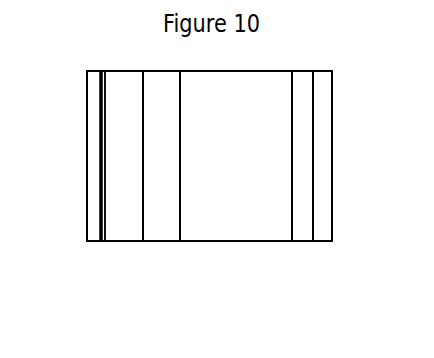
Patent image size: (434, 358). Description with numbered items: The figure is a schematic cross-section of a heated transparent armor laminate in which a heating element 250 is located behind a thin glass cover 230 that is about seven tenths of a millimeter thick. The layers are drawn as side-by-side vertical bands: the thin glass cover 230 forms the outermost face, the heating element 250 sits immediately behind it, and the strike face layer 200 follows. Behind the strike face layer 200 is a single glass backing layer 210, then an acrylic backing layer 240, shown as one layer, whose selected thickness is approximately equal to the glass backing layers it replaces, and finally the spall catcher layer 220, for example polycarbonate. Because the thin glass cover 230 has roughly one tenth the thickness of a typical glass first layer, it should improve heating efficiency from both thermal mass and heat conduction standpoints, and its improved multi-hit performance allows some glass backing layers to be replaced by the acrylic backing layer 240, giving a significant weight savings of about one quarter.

The strike face layer 200 is at (125, 202).
The glass backing layer 210 is at (161, 200).
The spall catcher layer 220 is at (292, 241).
The thin glass cover 230 is at (80, 247).
The acrylic backing layer 240 is at (255, 203).
The heating element 250 is at (105, 250).